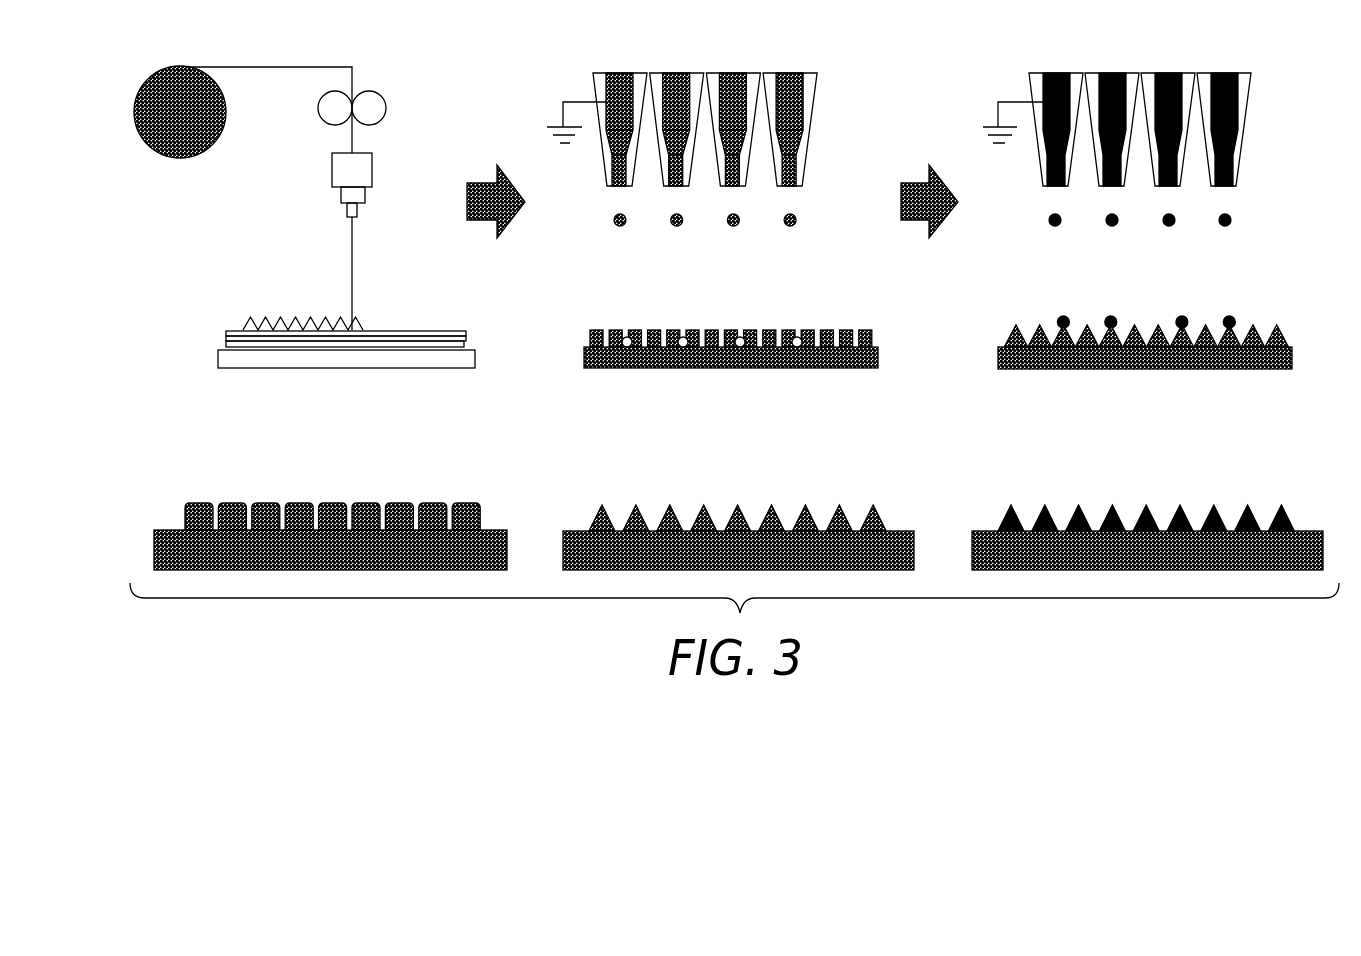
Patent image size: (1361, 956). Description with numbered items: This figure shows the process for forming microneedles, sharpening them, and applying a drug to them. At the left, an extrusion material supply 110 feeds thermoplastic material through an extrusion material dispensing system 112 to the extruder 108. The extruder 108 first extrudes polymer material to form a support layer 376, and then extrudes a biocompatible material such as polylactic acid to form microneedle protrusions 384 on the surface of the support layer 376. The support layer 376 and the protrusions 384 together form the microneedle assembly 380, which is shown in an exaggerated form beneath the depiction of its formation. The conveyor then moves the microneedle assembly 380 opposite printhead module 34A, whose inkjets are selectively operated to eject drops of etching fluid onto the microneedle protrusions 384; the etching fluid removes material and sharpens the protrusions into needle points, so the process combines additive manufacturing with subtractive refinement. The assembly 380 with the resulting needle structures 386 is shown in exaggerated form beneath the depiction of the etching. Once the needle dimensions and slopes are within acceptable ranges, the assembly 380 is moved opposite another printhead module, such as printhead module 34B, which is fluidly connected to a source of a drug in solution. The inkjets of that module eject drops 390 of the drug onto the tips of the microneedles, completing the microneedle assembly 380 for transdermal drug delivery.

The extrusion material supply 110 is at (207, 147).
The extrusion material dispensing system 112 is at (387, 108).
The extruder 108 is at (372, 168).
The microneedle protrusions 384 is at (282, 320).
The microneedle assembly 380 is at (443, 330).
The support layer 376 is at (217, 360).
The needle structures 386 is at (625, 338).
The drops of a drug in solution 390 is at (1113, 317).
The printhead module 34A is at (830, 131).
The printhead module 34B is at (1256, 129).